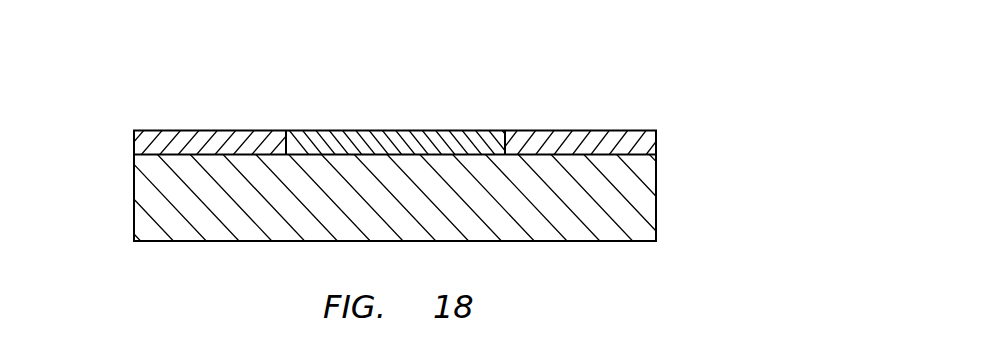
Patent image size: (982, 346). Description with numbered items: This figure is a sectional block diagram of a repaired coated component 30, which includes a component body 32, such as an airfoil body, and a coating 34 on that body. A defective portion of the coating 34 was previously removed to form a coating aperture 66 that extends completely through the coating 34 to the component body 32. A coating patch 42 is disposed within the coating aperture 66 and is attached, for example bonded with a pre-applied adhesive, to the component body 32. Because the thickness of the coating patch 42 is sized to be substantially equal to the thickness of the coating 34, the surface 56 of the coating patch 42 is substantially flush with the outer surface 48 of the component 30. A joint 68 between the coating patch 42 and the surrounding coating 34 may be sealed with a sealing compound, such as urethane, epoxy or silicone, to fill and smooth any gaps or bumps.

The coated component 30 is at (389, 155).
The component body 32 is at (640, 206).
The coating 34 is at (417, 110).
The coating patch 42 is at (336, 132).
The outer surface 48 is at (628, 130).
The surface of the coating patch 56 is at (468, 130).
The coating aperture 66 is at (509, 141).
The joint 68 is at (275, 131).